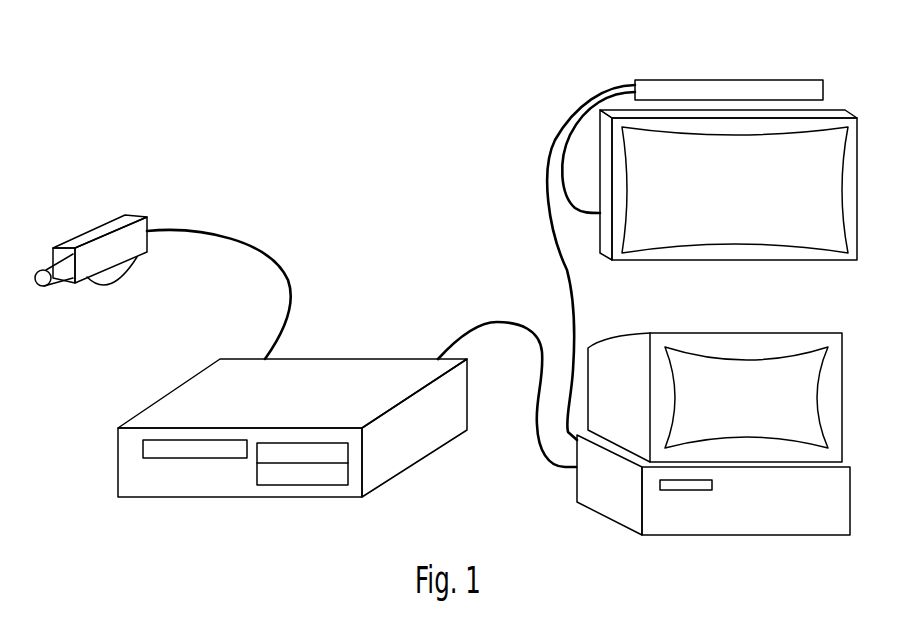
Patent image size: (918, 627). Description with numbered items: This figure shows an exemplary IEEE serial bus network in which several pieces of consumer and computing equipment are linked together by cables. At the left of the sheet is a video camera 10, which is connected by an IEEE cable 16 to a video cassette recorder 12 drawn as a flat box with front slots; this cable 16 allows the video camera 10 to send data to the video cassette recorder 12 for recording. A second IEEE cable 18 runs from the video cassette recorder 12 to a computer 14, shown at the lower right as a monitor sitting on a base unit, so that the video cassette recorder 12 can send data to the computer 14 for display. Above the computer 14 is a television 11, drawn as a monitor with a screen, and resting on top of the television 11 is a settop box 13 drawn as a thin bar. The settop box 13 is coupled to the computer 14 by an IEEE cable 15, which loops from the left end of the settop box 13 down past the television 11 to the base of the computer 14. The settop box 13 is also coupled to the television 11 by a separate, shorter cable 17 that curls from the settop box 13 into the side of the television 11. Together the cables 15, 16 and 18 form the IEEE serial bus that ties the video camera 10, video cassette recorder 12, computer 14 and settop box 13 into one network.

The video camera 10 is at (137, 216).
The television 11 is at (843, 263).
The video cassette recorder 12 is at (433, 453).
The settop box 13 is at (733, 78).
The computer 14 is at (757, 537).
The IEEE 1394-1995 cable 15 is at (545, 175).
The IEEE 1394-1995 cable 16 is at (291, 287).
The cable 17 is at (583, 216).
The IEEE 1394-1995 cable 18 is at (458, 331).